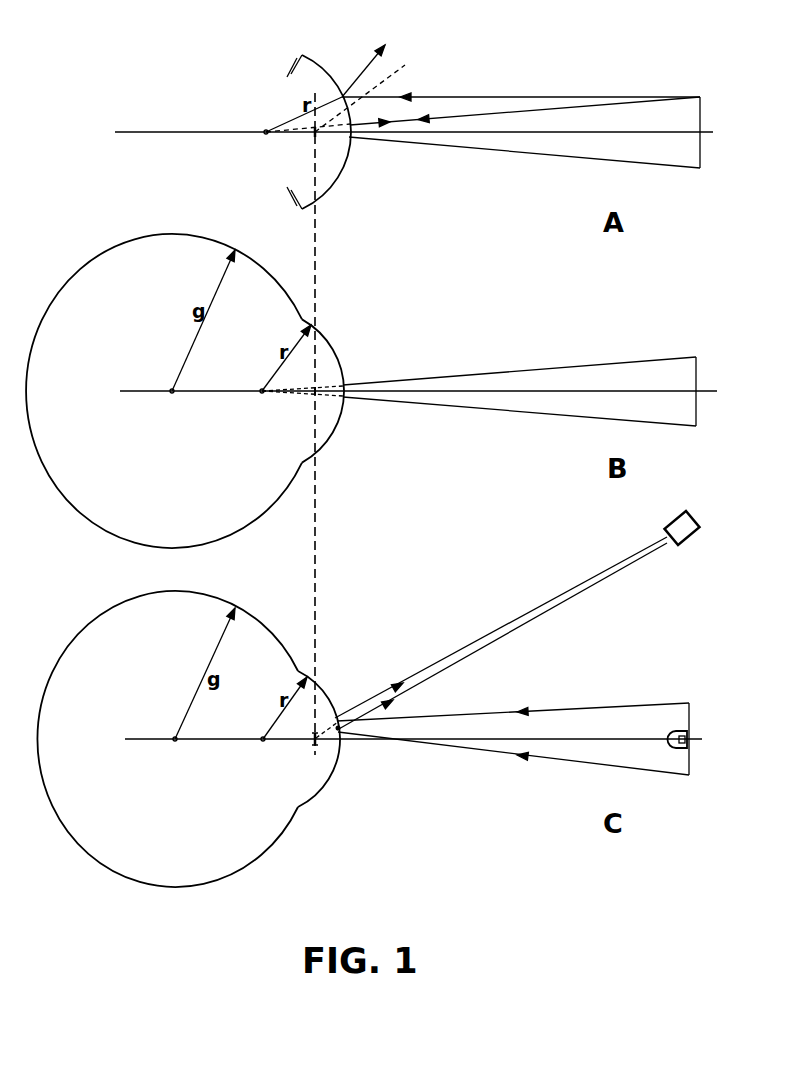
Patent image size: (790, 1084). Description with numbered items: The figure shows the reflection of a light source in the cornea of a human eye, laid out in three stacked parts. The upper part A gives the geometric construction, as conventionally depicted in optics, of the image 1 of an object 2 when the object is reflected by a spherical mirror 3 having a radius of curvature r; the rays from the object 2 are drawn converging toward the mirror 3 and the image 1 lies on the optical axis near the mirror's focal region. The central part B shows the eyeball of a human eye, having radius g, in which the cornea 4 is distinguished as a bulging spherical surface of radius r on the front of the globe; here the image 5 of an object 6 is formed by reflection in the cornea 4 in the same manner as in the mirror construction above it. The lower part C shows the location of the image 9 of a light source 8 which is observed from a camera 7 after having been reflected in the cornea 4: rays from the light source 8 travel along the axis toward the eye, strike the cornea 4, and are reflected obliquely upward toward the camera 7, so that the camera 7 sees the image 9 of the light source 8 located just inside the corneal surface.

The image 1 is at (317, 135).
The object 2 is at (700, 132).
The spherical mirror 3 is at (321, 64).
The cornea 4 is at (327, 337).
The image 5 is at (317, 393).
The object 6 is at (696, 391).
The camera 7 is at (667, 528).
The light source 8 is at (667, 732).
The image 9 is at (338, 731).